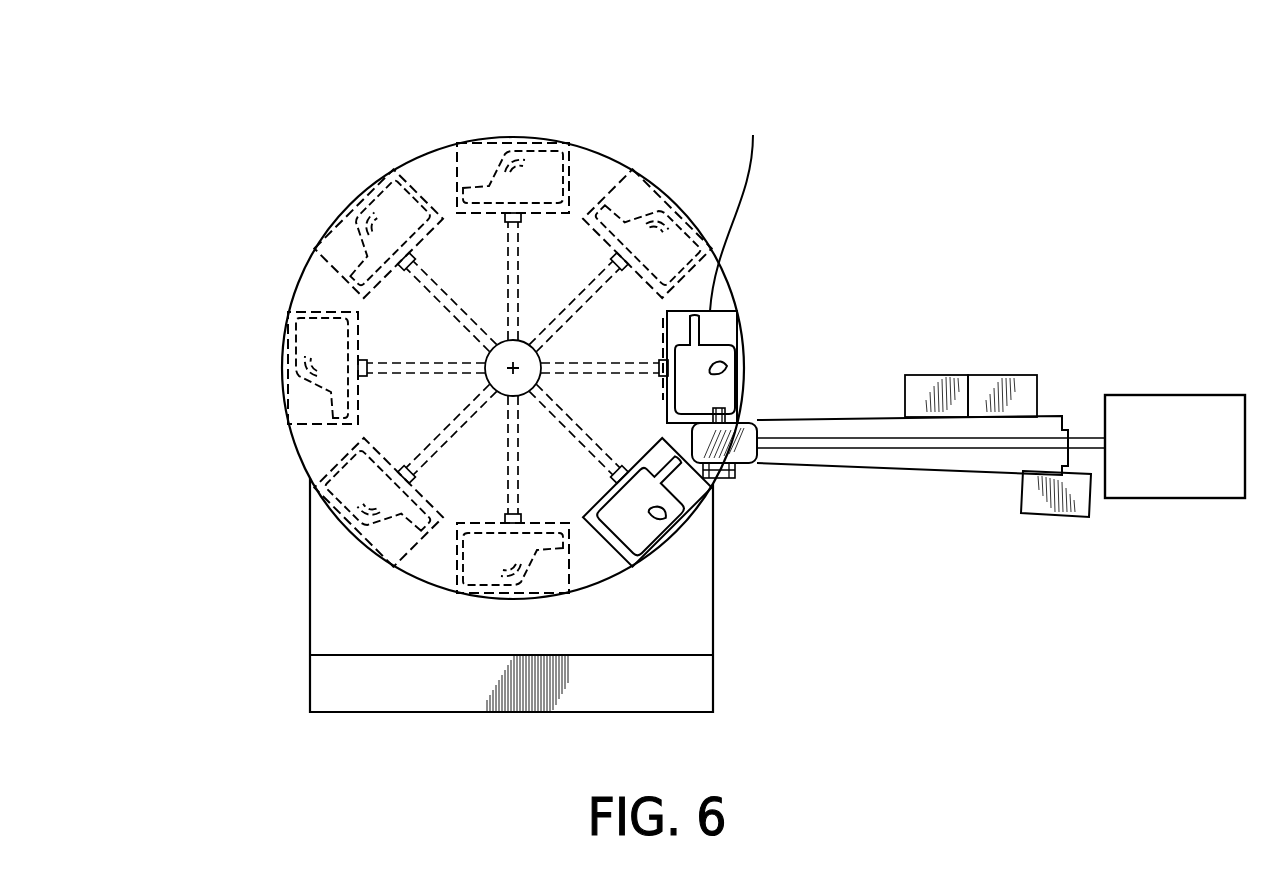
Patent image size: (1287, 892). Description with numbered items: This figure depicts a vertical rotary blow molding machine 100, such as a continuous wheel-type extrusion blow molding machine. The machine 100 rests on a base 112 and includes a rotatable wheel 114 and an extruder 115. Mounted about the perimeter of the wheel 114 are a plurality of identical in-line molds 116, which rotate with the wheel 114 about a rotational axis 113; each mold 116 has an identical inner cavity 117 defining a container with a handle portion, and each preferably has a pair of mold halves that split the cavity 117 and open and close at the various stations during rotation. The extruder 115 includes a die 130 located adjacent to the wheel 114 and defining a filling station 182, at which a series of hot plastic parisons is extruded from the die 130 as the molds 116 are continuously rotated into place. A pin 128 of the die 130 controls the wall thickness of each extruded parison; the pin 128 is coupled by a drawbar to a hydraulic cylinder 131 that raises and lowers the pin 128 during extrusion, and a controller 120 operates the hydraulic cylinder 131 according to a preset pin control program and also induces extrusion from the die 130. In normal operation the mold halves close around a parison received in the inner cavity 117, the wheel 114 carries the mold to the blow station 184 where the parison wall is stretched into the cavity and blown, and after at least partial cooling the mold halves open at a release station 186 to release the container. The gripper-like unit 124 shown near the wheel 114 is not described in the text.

The vertical rotary blow molding machine 100 is at (360, 128).
The base 112 is at (311, 690).
The rotational axis 113 is at (511, 371).
The rotatable wheel 114 is at (300, 276).
The extruder 115 is at (1188, 385).
The identical in-line molds 116 is at (344, 214).
The inner cavity 117 is at (360, 329).
The controller 120 is at (1076, 518).
The gripper unit 124 is at (657, 554).
The pin 128 is at (757, 421).
The die 130 is at (752, 421).
The hydraulic cylinder 131 is at (740, 479).
The filling station 182 is at (738, 358).
The blow station 184 is at (513, 139).
The release station 186 is at (289, 386).